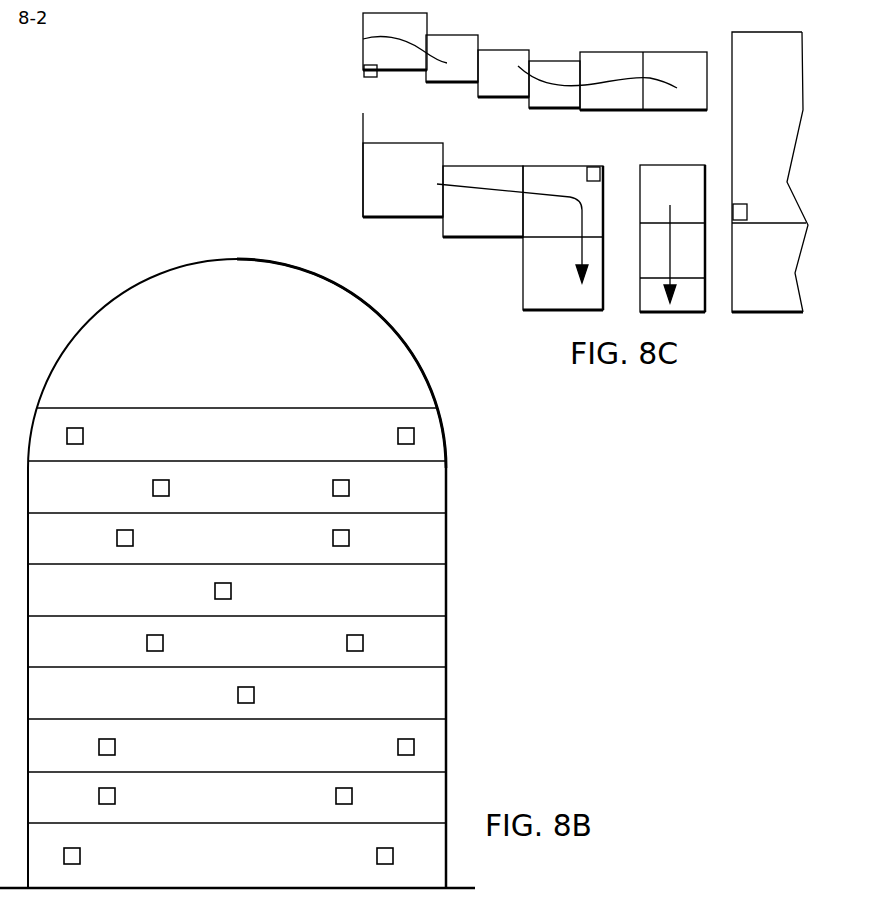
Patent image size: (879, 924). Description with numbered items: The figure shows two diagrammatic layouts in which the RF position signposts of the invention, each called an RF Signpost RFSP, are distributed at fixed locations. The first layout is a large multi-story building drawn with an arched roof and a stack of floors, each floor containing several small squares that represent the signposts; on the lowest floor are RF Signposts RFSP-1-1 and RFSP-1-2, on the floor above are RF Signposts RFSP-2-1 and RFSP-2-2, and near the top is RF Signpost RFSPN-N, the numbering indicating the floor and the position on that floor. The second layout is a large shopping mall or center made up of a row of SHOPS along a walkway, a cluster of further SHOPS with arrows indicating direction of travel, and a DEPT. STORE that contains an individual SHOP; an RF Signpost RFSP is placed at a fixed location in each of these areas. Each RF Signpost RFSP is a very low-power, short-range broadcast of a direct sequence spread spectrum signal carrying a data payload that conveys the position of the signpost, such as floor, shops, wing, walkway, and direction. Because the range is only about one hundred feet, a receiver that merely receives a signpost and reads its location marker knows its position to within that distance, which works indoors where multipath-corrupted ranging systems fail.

In FIG. 8C, the RF Signpost RFSP is at (378, 74).
In FIG. 8B, the RF Signpost RFSP is at (169, 488).
In FIG. 8B, the RF Signpost N-N RFSPN-N is at (83, 435).
In FIG. 8B, the RF Signpost 2-1 RFSP-2-1 is at (115, 797).
In FIG. 8B, the RF Signpost 2-2 RFSP-2-2 is at (372, 803).
In FIG. 8B, the RF Signpost 1-1 RFSP-1-1 is at (80, 856).
In FIG. 8B, the RF Signpost 1-2 RFSP-1-2 is at (376, 855).
In FIG. 8C, the shops SHOPS is at (535, 162).
In FIG. 8C, the department store DEPT. STORE is at (770, 172).
In FIG. 8C, the shop SHOP is at (762, 266).